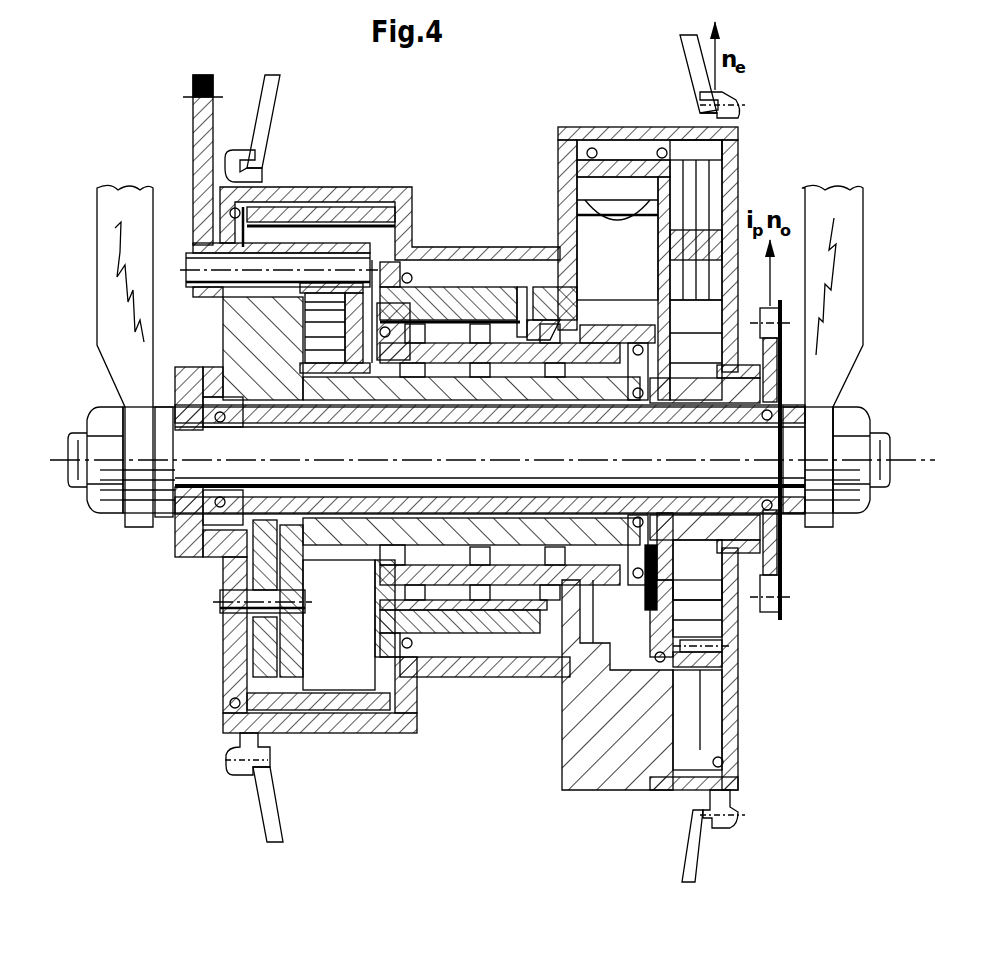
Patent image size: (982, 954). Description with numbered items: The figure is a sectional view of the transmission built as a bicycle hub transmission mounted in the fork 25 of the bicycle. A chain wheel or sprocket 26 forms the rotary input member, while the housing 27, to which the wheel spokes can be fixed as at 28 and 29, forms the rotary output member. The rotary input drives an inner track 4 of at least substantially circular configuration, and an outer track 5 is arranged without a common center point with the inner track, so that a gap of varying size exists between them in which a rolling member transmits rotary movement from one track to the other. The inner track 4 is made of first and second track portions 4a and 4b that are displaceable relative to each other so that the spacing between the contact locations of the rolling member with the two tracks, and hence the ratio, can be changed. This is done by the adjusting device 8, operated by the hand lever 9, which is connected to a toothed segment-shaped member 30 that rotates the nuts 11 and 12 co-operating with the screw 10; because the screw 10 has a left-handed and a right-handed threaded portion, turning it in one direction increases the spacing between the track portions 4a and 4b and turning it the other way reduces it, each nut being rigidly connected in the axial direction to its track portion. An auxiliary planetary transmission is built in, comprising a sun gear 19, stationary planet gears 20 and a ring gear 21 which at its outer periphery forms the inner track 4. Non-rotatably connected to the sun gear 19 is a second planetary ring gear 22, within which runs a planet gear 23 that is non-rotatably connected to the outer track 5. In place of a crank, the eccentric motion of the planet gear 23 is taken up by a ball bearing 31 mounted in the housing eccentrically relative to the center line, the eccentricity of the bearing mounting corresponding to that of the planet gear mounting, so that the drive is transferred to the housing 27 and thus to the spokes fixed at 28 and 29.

The inner track 4 is at (594, 305).
The first track portion 4a is at (560, 320).
The second track portion 4b is at (655, 320).
The outer track 5 is at (580, 177).
The adjusting device 8 is at (190, 97).
The hand lever 9 is at (196, 162).
The screw 10 is at (457, 290).
The nut 11 is at (440, 590).
The nut 12 is at (563, 597).
The sun gear 19 is at (197, 557).
The stationary planet gears 20 is at (267, 650).
The ring gear 21 is at (293, 700).
The second planetary ring gear 22 is at (727, 648).
The planet gear 23 is at (782, 605).
The fork 25 is at (138, 212).
The chain wheel 26 is at (782, 563).
The housing 27 is at (585, 138).
The spoke fixing 28 is at (700, 96).
The spoke fixing 29 is at (262, 90).
The toothed segment-shaped member 30 is at (345, 190).
The ball bearing 31 is at (593, 663).